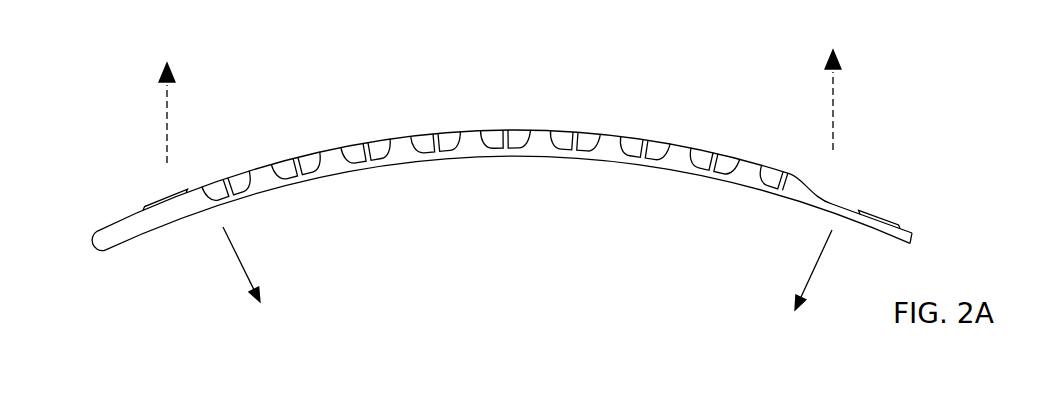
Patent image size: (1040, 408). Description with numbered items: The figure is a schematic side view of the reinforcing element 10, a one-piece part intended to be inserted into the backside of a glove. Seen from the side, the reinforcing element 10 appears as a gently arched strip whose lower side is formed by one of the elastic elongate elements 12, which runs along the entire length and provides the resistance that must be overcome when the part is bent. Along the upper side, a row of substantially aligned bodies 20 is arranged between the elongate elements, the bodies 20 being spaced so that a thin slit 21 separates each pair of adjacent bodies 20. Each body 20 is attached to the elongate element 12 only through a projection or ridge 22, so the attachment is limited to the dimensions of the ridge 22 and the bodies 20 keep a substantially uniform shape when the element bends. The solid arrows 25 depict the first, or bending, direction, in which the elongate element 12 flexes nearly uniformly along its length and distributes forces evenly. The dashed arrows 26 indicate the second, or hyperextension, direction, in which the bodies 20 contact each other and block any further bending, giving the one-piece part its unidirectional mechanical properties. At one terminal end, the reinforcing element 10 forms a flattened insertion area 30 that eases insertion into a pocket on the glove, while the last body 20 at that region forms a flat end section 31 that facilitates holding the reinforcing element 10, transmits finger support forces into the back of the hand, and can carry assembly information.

The reinforcing element 10 is at (502, 164).
The elongate element 12 is at (441, 159).
The body 20 is at (443, 133).
The slit 21 is at (503, 130).
The ridge 22 is at (472, 140).
The solid arrows 25 is at (240, 253).
The dashed arrows 26 is at (170, 102).
The insertion area 30 is at (867, 228).
The flat end section 31 is at (135, 228).